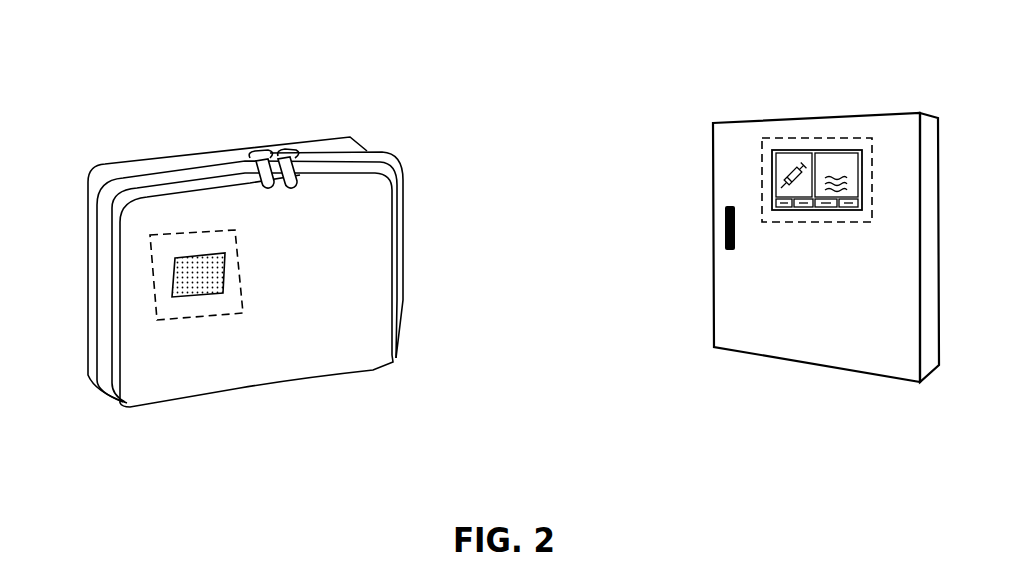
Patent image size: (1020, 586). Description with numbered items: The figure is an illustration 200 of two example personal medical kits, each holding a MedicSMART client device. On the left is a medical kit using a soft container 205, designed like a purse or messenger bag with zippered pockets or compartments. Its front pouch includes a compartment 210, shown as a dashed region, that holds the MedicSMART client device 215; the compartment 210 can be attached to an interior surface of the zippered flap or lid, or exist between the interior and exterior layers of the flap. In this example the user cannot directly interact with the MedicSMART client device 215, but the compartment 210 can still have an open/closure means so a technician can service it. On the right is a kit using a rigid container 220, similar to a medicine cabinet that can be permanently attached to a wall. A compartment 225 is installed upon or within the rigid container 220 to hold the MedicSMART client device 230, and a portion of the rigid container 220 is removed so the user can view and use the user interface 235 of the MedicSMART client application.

The illustration 200 is at (69, 30).
The soft container 205 is at (262, 147).
The compartment 210 is at (202, 317).
The MedicSMART client device 215 is at (223, 290).
The rigid container 220 is at (733, 120).
The compartment 225 is at (762, 177).
The MedicSMART client device 230 is at (776, 209).
The user interface 235 is at (806, 184).